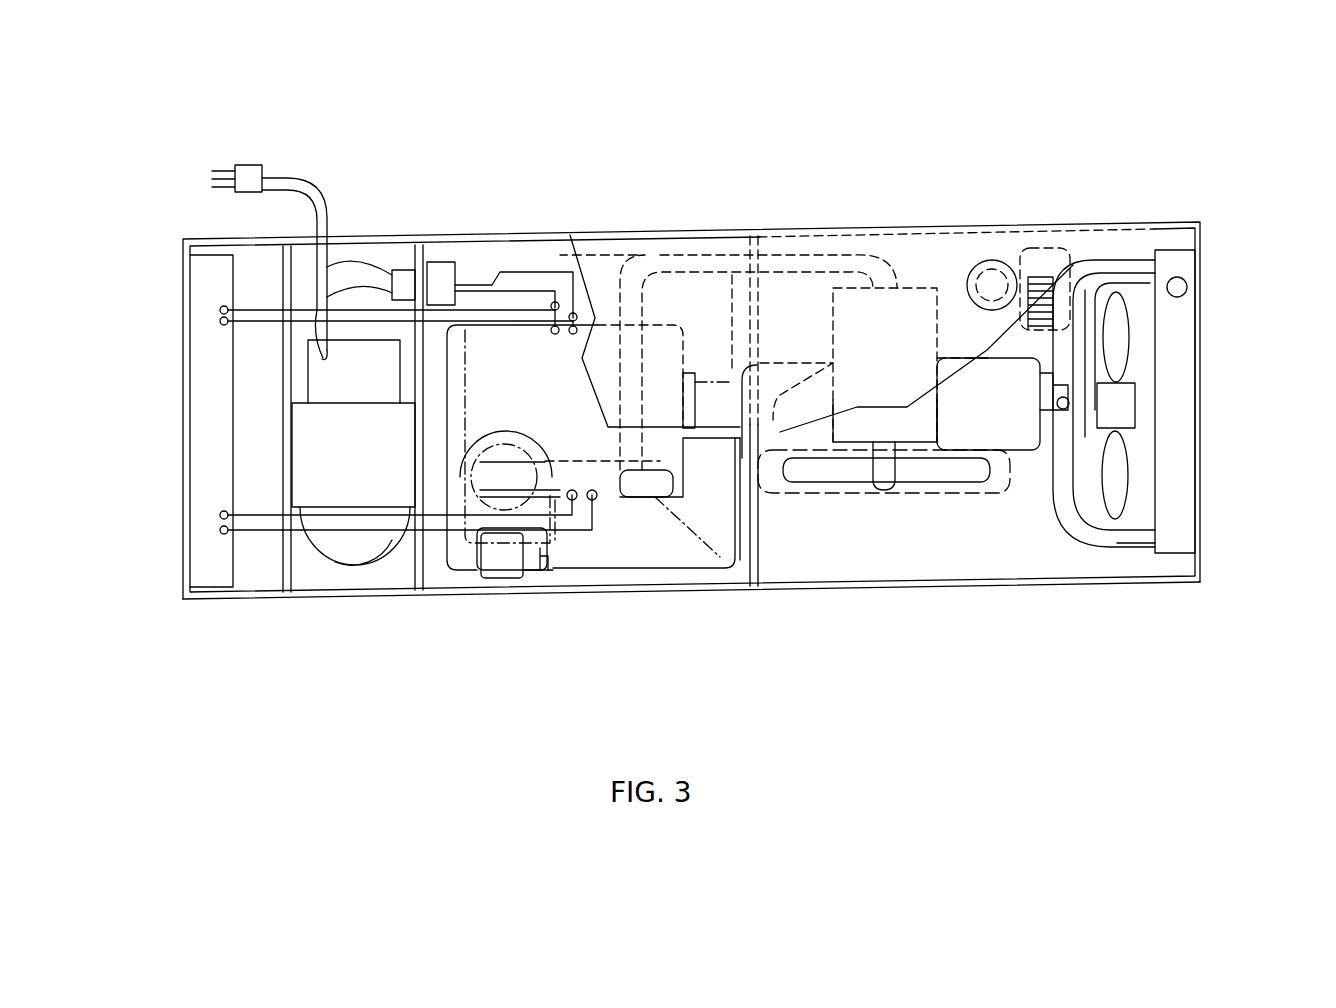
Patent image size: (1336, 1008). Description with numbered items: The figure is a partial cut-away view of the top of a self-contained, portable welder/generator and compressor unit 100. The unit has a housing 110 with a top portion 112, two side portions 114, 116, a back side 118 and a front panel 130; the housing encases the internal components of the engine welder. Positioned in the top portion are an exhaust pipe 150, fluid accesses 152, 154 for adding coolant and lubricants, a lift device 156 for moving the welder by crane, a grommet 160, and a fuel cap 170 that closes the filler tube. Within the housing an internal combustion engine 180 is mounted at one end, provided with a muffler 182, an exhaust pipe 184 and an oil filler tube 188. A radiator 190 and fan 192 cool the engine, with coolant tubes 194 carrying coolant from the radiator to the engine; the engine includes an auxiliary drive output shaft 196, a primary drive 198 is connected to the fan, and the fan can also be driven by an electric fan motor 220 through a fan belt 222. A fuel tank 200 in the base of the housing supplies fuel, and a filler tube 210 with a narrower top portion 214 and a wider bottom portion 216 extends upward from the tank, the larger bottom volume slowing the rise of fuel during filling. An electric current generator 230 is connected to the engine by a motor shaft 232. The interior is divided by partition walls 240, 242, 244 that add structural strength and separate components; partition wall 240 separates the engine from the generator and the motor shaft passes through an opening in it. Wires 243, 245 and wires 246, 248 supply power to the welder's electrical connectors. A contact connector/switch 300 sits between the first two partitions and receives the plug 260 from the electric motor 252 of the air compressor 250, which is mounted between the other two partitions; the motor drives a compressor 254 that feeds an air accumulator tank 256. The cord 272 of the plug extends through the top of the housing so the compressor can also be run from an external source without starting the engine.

The welder/generator and compressor unit 100 is at (988, 652).
The housing 110 is at (180, 557).
The top portion 112 is at (973, 243).
The side portion 114 is at (308, 598).
The side portion 116 is at (412, 235).
The back side 118 is at (1202, 232).
The front panel 130 is at (183, 275).
The exhaust pipe 150 is at (745, 560).
The coolant access 152 is at (1187, 282).
The fluid access 154 is at (990, 260).
The lift device 156 is at (693, 373).
The grommet 160 is at (505, 427).
The fuel cap 170 is at (523, 450).
The internal combustion engine 180 is at (1012, 457).
The muffler 182 is at (910, 422).
The exhaust pipe 184 is at (815, 247).
The oil filler tube 188 is at (947, 290).
The radiator 190 is at (1185, 408).
The fan 192 is at (1127, 485).
The coolant tubes 194 is at (1133, 257).
The auxiliary drive output shaft 196 is at (1060, 405).
The primary drive 198 is at (1063, 432).
The fuel tank 200 is at (638, 560).
The filler tube 210 is at (513, 572).
The top portion 214 is at (495, 578).
The bottom portion 216 is at (540, 556).
The electric fan motor 220 is at (1043, 308).
The fan belt 222 is at (1093, 333).
The electric current generator 230 is at (628, 502).
The motor shaft 232 is at (705, 440).
The partition wall 240 is at (757, 557).
The partition wall 242 is at (423, 255).
The wire 243 is at (258, 518).
The partition wall 244 is at (287, 487).
The wire 245 is at (265, 532).
The wire 246 is at (262, 310).
The wire 248 is at (253, 323).
The air compressor 250 is at (310, 430).
The electric motor 252 is at (317, 378).
The compressor 254 is at (307, 463).
The air accumulator tank 256 is at (370, 570).
The plug 260 is at (253, 172).
The cord 272 is at (292, 185).
The contact connector/switch 300 is at (457, 262).